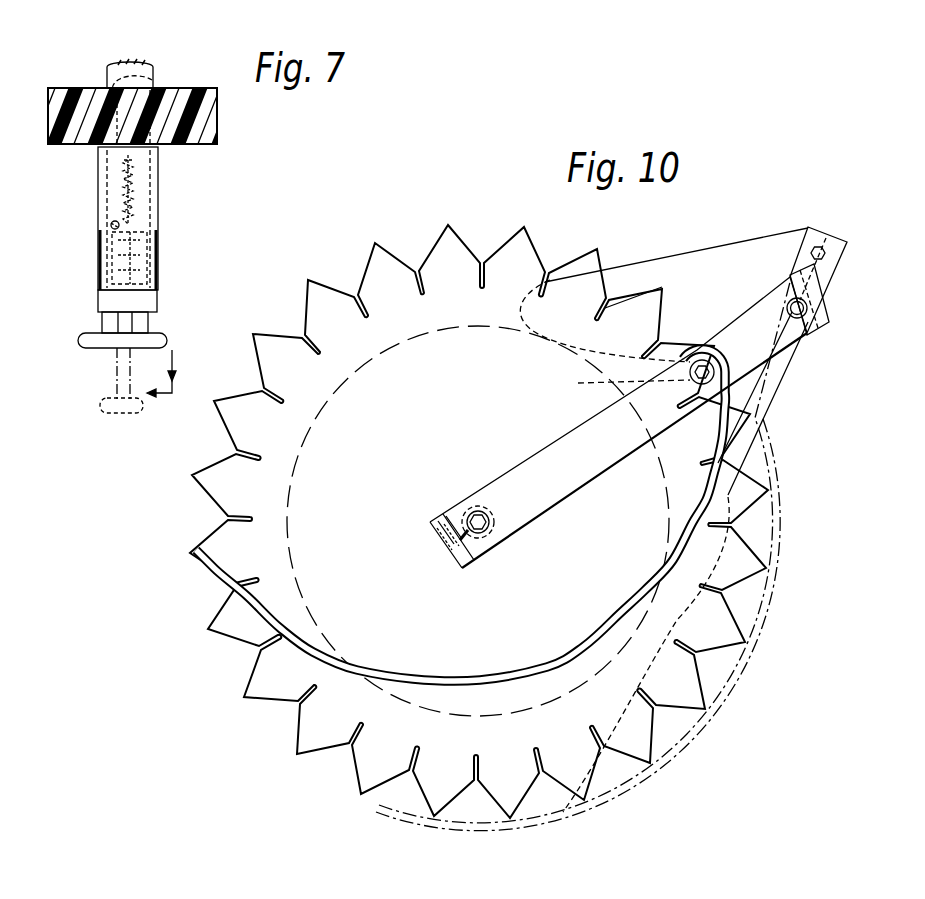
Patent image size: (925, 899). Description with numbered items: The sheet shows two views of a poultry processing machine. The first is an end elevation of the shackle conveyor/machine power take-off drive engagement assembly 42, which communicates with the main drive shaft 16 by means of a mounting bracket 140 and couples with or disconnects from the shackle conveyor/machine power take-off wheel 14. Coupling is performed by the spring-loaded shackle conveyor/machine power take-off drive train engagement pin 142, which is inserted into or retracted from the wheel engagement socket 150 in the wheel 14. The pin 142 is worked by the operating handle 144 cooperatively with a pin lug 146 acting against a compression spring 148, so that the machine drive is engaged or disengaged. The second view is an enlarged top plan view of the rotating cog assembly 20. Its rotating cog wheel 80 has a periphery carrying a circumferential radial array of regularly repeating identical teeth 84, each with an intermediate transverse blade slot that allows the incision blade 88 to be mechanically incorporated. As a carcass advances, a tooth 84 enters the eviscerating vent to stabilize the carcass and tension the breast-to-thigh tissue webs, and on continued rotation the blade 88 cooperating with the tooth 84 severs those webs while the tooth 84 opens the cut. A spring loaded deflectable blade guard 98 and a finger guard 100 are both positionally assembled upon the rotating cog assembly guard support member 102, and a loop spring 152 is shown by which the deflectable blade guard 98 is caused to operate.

In FIG. 7, the main drive shaft 16 is at (142, 63).
In FIG. 7, the wheel engagement socket 150 is at (152, 80).
In FIG. 7, the shackle conveyor/machine power take-off wheel 14 is at (216, 122).
In FIG. 7, the mounting bracket 140 is at (157, 212).
In FIG. 7, the spring-loaded shackle conveyor/machine power take-off drive train engagement pin 142 is at (138, 175).
In FIG. 7, the pin lug 146 is at (113, 226).
In FIG. 7, the compression spring 148 is at (157, 251).
In FIG. 7, the operating handle 144 is at (157, 333).
In FIG. 7, the shackle conveyor/machine power take-off drive engagement assembly 42 is at (76, 402).
In FIG. 10, the rotating cog assembly 20 is at (445, 208).
In FIG. 10, the teeth 84 is at (530, 238).
In FIG. 10, the rotating cog wheel 80 is at (478, 521).
In FIG. 10, the loop spring 152 is at (627, 382).
In FIG. 10, the spring loaded deflectable blade guard 98 is at (214, 556).
In FIG. 10, the rotating cog assembly guard support member 102 is at (565, 437).
In FIG. 10, the finger guard 100 is at (672, 262).
In FIG. 10, the incision blade 88 is at (768, 407).